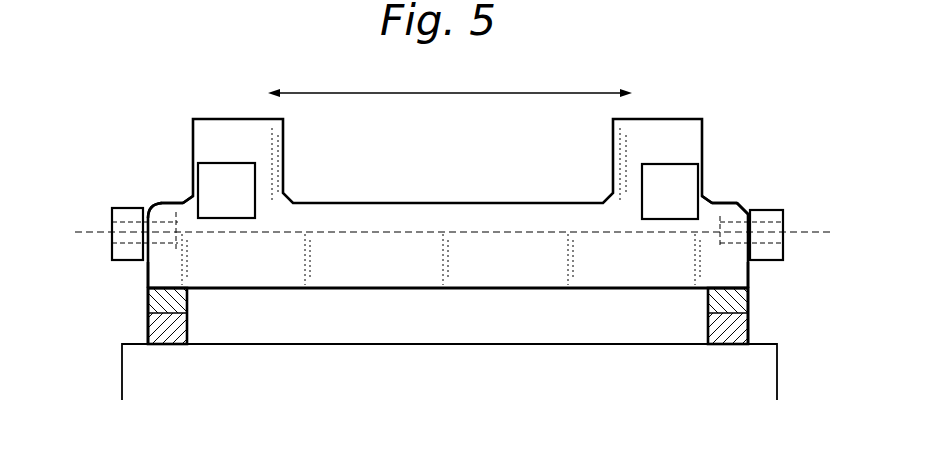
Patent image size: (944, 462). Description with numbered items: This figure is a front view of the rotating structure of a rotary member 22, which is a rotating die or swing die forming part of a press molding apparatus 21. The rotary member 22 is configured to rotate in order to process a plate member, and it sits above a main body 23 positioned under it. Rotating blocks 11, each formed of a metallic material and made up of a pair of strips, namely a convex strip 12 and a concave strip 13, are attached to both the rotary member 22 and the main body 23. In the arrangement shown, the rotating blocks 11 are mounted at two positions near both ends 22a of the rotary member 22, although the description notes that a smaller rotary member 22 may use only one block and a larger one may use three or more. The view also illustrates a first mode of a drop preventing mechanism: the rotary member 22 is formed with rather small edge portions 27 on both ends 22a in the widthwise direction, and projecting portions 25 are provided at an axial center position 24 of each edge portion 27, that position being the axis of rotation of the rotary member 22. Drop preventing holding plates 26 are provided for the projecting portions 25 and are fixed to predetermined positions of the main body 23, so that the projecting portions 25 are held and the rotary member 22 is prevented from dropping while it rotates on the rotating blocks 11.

The rotating block 11 is at (454, 318).
The convex strip 12 is at (188, 300).
The concave strip 13 is at (189, 333).
The press molding apparatus 21 is at (800, 130).
The rotary member 22 is at (558, 302).
The ends of the rotary member 22a is at (148, 281).
The main body 23 is at (420, 350).
The axial center position 24 is at (161, 204).
The projecting portion 25 is at (112, 216).
The drop preventing holding plate 26 is at (129, 205).
The edge portion 27 is at (167, 201).